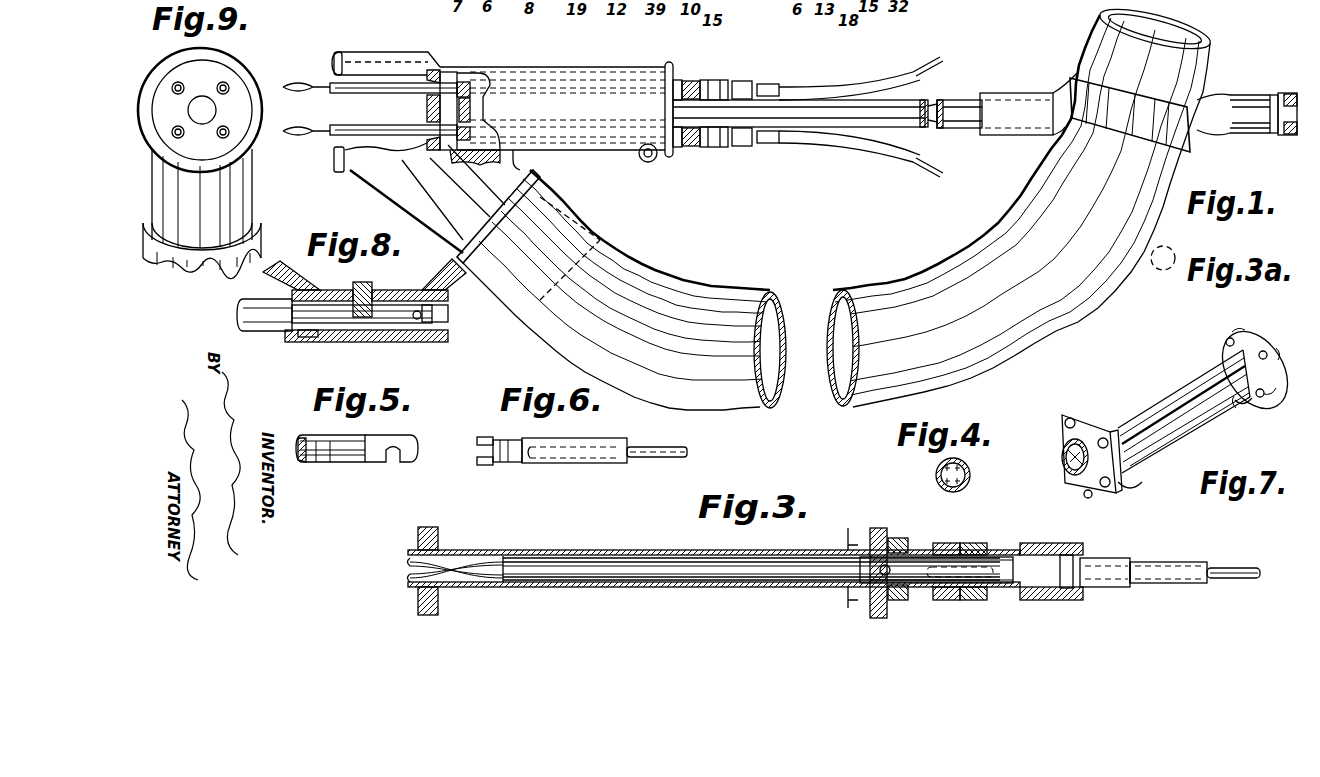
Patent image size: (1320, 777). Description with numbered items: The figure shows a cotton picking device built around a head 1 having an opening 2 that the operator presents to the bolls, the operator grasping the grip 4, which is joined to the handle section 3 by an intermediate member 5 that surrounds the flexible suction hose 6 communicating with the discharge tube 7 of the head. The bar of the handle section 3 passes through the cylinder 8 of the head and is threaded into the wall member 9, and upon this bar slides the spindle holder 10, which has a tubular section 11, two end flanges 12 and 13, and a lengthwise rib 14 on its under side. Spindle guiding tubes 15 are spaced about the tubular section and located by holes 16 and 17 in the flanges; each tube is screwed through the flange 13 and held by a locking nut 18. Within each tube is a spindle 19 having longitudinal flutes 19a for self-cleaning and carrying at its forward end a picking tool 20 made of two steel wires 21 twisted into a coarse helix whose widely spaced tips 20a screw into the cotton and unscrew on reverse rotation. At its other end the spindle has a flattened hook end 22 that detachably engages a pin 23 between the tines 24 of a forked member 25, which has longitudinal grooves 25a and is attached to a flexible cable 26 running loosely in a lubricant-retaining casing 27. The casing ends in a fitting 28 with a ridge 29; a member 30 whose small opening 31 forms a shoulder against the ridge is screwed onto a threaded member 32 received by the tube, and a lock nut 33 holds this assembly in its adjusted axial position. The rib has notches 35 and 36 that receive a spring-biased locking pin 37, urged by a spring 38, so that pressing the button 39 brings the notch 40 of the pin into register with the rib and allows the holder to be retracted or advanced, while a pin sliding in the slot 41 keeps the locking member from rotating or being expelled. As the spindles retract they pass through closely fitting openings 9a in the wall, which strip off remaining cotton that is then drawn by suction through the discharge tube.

In FIG. 9, the head 1 is at (249, 64).
In FIG. 1, the head 1 is at (370, 54).
In FIG. 1, the opening 2 is at (334, 63).
In FIG. 9, the handle section 3 is at (208, 118).
In FIG. 1, the handle section 3 is at (955, 100).
In FIG. 1, the handle member or grip 4 is at (1288, 93).
In FIG. 3, the handle member or grip 4 is at (855, 571).
In FIG. 1, the intermediate member 5 is at (1005, 93).
In FIG. 9, the flexible suction hose 6 is at (150, 223).
In FIG. 1, the flexible suction hose 6 is at (1210, 80).
In FIG. 9, the discharge tube 7 is at (154, 183).
In FIG. 1, the discharge tube 7 is at (395, 195).
In FIG. 1, the cylinder 8 is at (555, 67).
In FIG. 8, the cylinder 8 is at (268, 279).
In FIG. 1, the wall member 9 is at (427, 112).
In FIG. 9, the openings 9a is at (176, 93).
In FIG. 1, the openings 9a is at (430, 80).
In FIG. 1, the spindle holder 10 is at (490, 78).
In FIG. 7, the spindle holder 10 is at (1163, 413).
In FIG. 7, the tubular section 11 is at (1200, 366).
In FIG. 1, the flange 12 is at (448, 72).
In FIG. 7, the flange 12 is at (1069, 413).
In FIG. 3, the flange 12 is at (418, 540).
In FIG. 1, the flange 13 is at (669, 109).
In FIG. 7, the flange 13 is at (1256, 332).
In FIG. 3, the flange 13 is at (874, 528).
In FIG. 1, the rib 14 is at (470, 164).
In FIG. 7, the rib 14 is at (1190, 448).
In FIG. 8, the rib 14 is at (360, 282).
In FIG. 1, the spindle guiding tubes 15 is at (462, 82).
In FIG. 3, the spindle guiding tubes 15 is at (518, 550).
In FIG. 7, the holes 16 is at (1065, 421).
In FIG. 7, the holes 17 is at (1226, 341).
In FIG. 1, the locking nut 18 is at (678, 80).
In FIG. 3, the locking nut 18 is at (896, 538).
In FIG. 9, the spindle 19 is at (182, 88).
In FIG. 1, the spindle 19 is at (345, 127).
In FIG. 5, the spindle 19 is at (316, 458).
In FIG. 4, the spindle 19 is at (940, 478).
In FIG. 3, the spindle 19 is at (570, 560).
In FIG. 5, the flutes or grooves 19a is at (322, 436).
In FIG. 4, the flutes or grooves 19a is at (938, 467).
In FIG. 3, the flutes or grooves 19a is at (620, 566).
In FIG. 1, the cotton-picking tool or bit 20 is at (310, 86).
In FIG. 3, the cotton-picking tool or bit 20 is at (410, 562).
In FIG. 3A, the tips 20a is at (1172, 247).
In FIG. 3, the tips 20a is at (410, 566).
In FIG. 3, the steel wire 21 is at (485, 562).
In FIG. 5, the hook end 22 is at (406, 462).
In FIG. 6, the pin 23 is at (510, 462).
In FIG. 3, the pin 23 is at (890, 574).
In FIG. 6, the tines 24 is at (478, 440).
In FIG. 6, the member 25 is at (616, 438).
In FIG. 3, the member 25 is at (960, 580).
In FIG. 6, the grooves 25a is at (545, 447).
In FIG. 1, the flexible shaft or cable 26 is at (928, 62).
In FIG. 6, the flexible shaft or cable 26 is at (668, 447).
In FIG. 3, the flexible shaft or cable 26 is at (990, 578).
In FIG. 1, the flexible housing or casing 27 is at (820, 88).
In FIG. 3, the flexible housing or casing 27 is at (1175, 562).
In FIG. 1, the fitting 28 is at (768, 84).
In FIG. 3, the fitting 28 is at (1120, 558).
In FIG. 3, the ridge or ring 29 is at (1084, 587).
In FIG. 1, the member 30 is at (744, 62).
In FIG. 3, the member 30 is at (1042, 543).
In FIG. 3, the opening 31 is at (1080, 555).
In FIG. 1, the threaded member 32 is at (714, 80).
In FIG. 3, the threaded member 32 is at (974, 543).
In FIG. 1, the lock nut 33 is at (700, 62).
In FIG. 3, the lock nut 33 is at (946, 543).
In FIG. 1, the notch 35 is at (487, 163).
In FIG. 7, the notch 35 is at (1132, 482).
In FIG. 7, the notch 36 is at (1243, 403).
In FIG. 8, the locking pin 37 is at (322, 291).
In FIG. 8, the spring 38 is at (308, 340).
In FIG. 1, the button 39 is at (640, 158).
In FIG. 8, the button 39 is at (276, 331).
In FIG. 8, the notch 40 is at (422, 291).
In FIG. 8, the slot 41 is at (448, 314).